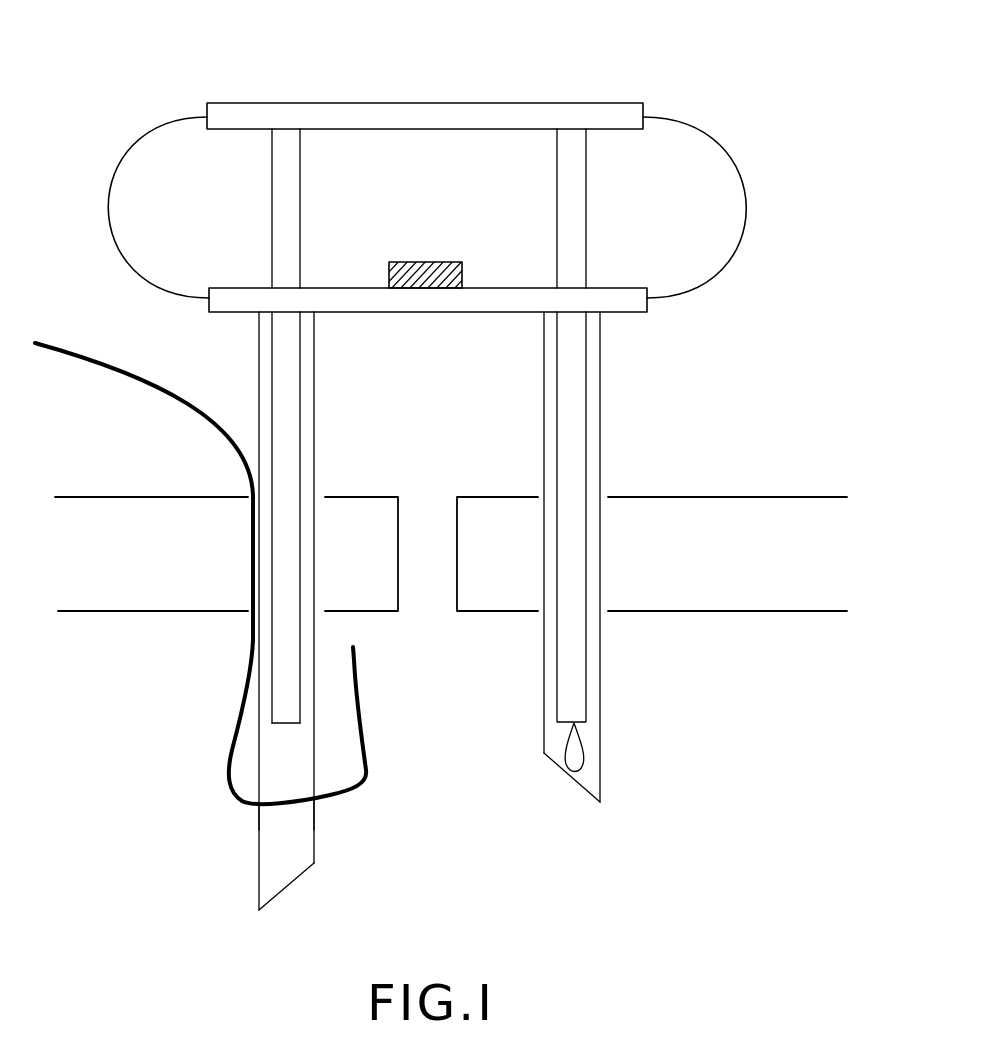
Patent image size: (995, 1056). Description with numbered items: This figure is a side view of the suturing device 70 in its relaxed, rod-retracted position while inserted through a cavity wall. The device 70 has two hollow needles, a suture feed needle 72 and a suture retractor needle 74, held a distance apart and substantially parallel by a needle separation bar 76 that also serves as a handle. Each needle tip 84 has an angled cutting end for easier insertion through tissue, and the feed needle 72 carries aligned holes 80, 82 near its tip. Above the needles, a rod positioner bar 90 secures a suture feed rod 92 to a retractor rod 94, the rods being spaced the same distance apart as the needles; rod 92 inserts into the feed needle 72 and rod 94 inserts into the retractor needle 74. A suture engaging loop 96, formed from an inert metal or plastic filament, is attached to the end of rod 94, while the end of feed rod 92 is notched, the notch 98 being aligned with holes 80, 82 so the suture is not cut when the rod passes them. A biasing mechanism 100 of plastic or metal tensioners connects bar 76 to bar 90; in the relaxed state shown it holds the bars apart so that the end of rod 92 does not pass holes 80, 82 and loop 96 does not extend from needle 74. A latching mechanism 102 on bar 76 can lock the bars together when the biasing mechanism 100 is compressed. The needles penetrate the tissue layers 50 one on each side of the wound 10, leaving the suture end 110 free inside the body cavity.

The wound 10 is at (440, 559).
The substrate layer 50 is at (160, 559).
The device 70 is at (198, 87).
The suture feed needle 72 is at (315, 421).
The suture retractor needle 74 is at (544, 394).
The needle separation bar 76 is at (409, 313).
The hole 80 is at (259, 814).
The hole 82 is at (318, 808).
The needle tip 84 is at (289, 888).
The rod positioner bar 90 is at (447, 103).
The suture feed rod 92 is at (302, 193).
The retractor rod 94 is at (588, 197).
The suture engaging loop 96 is at (588, 747).
The notch 98 is at (284, 724).
The biasing mechanism 100 is at (110, 196).
The latching mechanism 102 is at (420, 262).
The suture end 110 is at (364, 712).